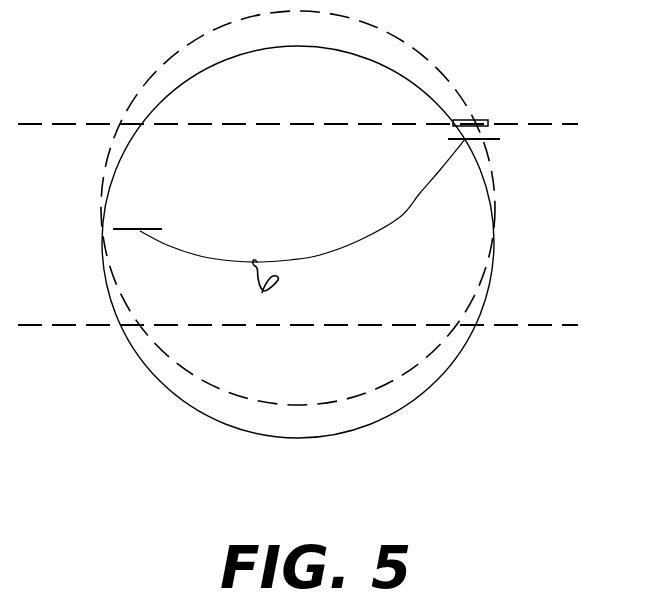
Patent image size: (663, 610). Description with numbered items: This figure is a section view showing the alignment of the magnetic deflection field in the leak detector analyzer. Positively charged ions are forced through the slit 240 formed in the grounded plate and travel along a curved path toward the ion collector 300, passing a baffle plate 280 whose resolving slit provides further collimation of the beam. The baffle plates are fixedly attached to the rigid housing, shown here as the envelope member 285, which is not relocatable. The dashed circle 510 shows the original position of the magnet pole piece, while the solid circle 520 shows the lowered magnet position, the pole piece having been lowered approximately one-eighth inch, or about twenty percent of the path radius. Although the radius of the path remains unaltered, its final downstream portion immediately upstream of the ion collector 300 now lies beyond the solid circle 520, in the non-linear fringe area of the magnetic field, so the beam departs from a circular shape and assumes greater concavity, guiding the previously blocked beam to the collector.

The slit 240 is at (135, 228).
The baffle plate 280 is at (488, 183).
The envelope member 285 is at (568, 123).
The ion collector 300 is at (485, 119).
The dashed circle 510 is at (183, 51).
The solid circle 520 is at (167, 385).